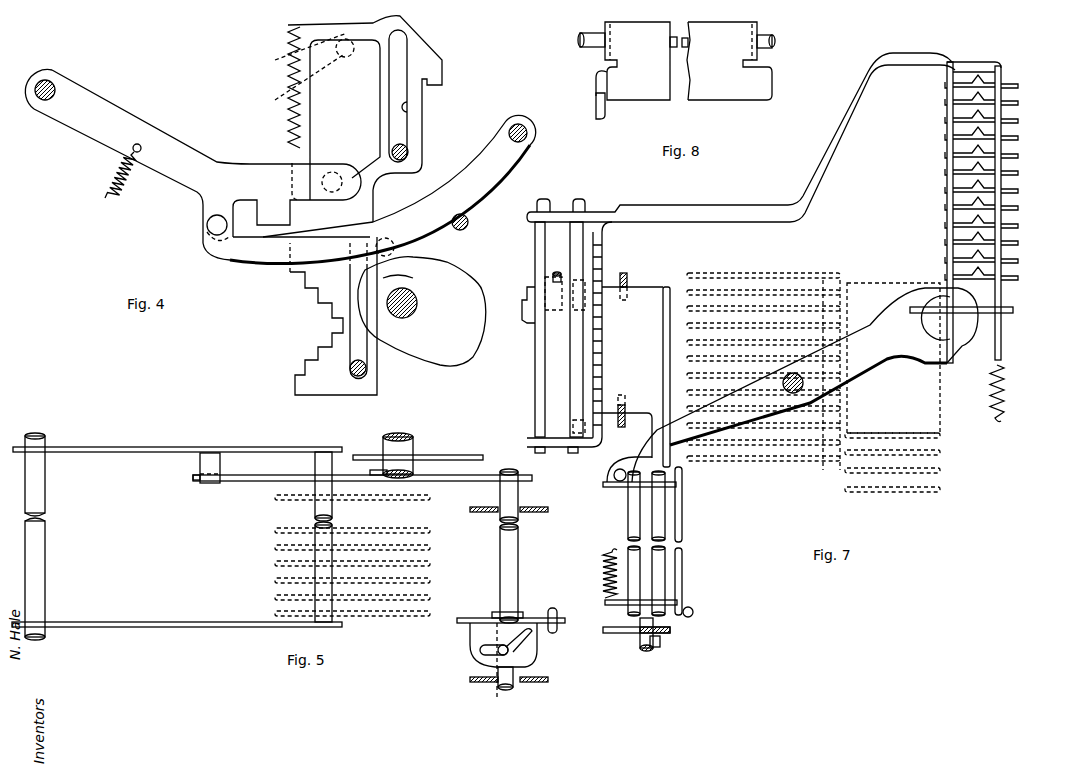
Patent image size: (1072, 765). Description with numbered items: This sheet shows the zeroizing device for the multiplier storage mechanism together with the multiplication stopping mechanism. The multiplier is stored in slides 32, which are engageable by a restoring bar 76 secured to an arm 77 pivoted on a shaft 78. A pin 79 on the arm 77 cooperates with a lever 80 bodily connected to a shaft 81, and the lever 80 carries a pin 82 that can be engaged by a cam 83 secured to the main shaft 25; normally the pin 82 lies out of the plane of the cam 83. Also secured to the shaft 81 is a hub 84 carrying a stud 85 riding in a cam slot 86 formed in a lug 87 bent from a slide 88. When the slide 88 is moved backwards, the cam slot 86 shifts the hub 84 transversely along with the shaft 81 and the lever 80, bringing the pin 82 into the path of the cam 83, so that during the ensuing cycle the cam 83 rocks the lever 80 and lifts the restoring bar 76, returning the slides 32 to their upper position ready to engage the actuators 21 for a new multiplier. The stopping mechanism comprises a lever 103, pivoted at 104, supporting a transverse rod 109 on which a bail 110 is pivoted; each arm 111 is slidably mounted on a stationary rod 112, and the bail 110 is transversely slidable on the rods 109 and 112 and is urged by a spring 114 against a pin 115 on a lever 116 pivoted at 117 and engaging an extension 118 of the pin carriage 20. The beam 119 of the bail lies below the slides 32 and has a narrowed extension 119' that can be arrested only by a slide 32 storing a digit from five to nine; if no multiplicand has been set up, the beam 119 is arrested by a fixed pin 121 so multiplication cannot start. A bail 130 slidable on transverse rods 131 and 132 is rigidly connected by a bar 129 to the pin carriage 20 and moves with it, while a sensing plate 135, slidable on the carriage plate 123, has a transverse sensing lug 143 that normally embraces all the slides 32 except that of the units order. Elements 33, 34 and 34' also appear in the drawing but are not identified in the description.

In FIG. 7, the pin carriage 20 is at (938, 215).
In FIG. 7, the actuators 21 is at (884, 286).
In FIG. 4, the main shaft 25 is at (402, 318).
In FIG. 5, the main shaft 25 is at (386, 447).
In FIG. 4, the slides 32 is at (373, 190).
In FIG. 5, the slides 32 is at (375, 498).
In FIG. 7, the slides 32 is at (775, 442).
In FIG. 4, the rack teeth 33 is at (408, 111).
In FIG. 4, the pin 34 is at (421, 152).
In FIG. 4, the pin 34' is at (333, 325).
In FIG. 4, the restoring bar 76 is at (337, 172).
In FIG. 5, the restoring bar 76 is at (335, 527).
In FIG. 4, the arm 77 is at (180, 148).
In FIG. 5, the arm 77 is at (106, 447).
In FIG. 4, the shaft 78 is at (51, 81).
In FIG. 5, the shaft 78 is at (46, 527).
In FIG. 4, the pin 79 is at (207, 226).
In FIG. 5, the pin 79 is at (208, 470).
In FIG. 4, the lever 80 is at (252, 255).
In FIG. 5, the lever 80 is at (253, 478).
In FIG. 4, the shaft 81 is at (518, 124).
In FIG. 5, the shaft 81 is at (505, 532).
In FIG. 4, the pin 82 is at (395, 248).
In FIG. 5, the pin 82 is at (370, 470).
In FIG. 4, the cam 83 is at (470, 298).
In FIG. 5, the cam 83 is at (434, 457).
In FIG. 5, the hub 84 is at (498, 615).
In FIG. 5, the stud 85 is at (525, 653).
In FIG. 5, the cam slot 86 is at (537, 640).
In FIG. 5, the lug 87 is at (473, 643).
In FIG. 5, the slide 88 is at (557, 616).
In FIG. 7, the lever 103 is at (618, 634).
In FIG. 7, the pivot 104 is at (658, 643).
In FIG. 8, the rod 109 is at (768, 42).
In FIG. 7, the rod 109 is at (665, 512).
In FIG. 8, the bail 110 is at (773, 109).
In FIG. 7, the bail 110 is at (694, 548).
In FIG. 7, the arm 111 is at (622, 484).
In FIG. 7, the stationary rod 112 is at (635, 510).
In FIG. 7, the spring 114 is at (608, 553).
In FIG. 7, the pin 115 is at (613, 475).
In FIG. 7, the lever 116 is at (857, 366).
In FIG. 7, the pivot 117 is at (801, 391).
In FIG. 7, the extension 118 is at (972, 308).
In FIG. 8, the beam 119 is at (675, 72).
In FIG. 7, the beam 119 is at (695, 581).
In FIG. 8, the narrowed extension 119' is at (746, 61).
In FIG. 7, the narrowed extension 119' is at (700, 504).
In FIG. 8, the fixed pin 121 is at (606, 110).
In FIG. 7, the fixed pin 121 is at (693, 610).
In FIG. 7, the plate 123 is at (623, 274).
In FIG. 7, the bar 129 is at (697, 213).
In FIG. 7, the bail 130 is at (601, 238).
In FIG. 7, the transverse rod 131 is at (580, 203).
In FIG. 7, the transverse rod 132 is at (543, 203).
In FIG. 7, the sensing plate 135 is at (642, 290).
In FIG. 7, the transverse sensing lug 143 is at (668, 290).